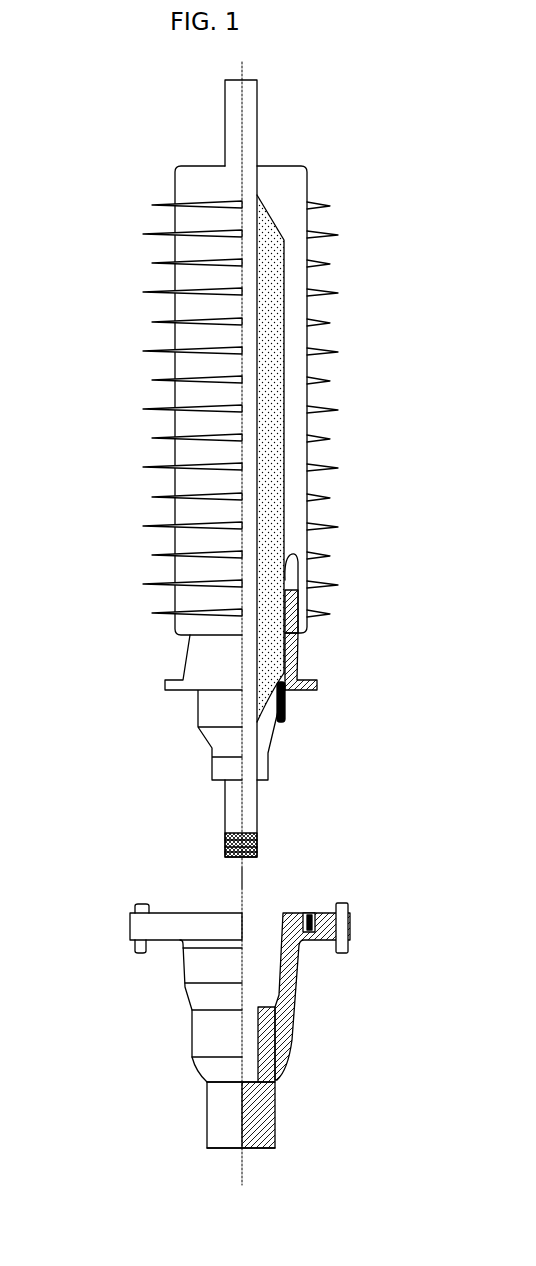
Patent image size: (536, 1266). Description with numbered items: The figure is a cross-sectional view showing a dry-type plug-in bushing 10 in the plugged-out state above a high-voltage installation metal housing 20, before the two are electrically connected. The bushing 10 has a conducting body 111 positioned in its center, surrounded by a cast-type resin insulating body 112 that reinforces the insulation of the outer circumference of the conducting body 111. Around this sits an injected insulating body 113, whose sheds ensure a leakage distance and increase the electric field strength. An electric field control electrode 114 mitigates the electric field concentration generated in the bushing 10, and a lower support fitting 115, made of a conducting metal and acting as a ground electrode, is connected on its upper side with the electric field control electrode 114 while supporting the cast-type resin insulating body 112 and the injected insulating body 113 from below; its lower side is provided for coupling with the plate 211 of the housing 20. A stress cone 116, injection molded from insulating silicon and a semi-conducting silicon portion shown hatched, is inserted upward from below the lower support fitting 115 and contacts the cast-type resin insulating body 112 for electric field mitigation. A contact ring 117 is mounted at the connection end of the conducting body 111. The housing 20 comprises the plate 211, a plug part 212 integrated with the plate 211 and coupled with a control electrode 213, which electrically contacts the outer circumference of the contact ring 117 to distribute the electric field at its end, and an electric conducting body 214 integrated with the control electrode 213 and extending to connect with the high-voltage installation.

The dry-type plug-in bushing 10 is at (93, 145).
The conducting body 111 is at (250, 134).
The cast-type resin insulating body 112 is at (273, 253).
The injected insulating body 113 is at (328, 348).
The electric field control electrode 114 is at (296, 567).
The lower support fitting 115 is at (318, 684).
The stress cone 116 is at (270, 756).
The contact ring 117 is at (259, 838).
The high-voltage installation metal housing 20 is at (93, 896).
The plate 211 is at (350, 922).
The plug part 212 is at (299, 983).
The control electrode 213 is at (291, 1037).
The electric conducting body 214 is at (276, 1108).